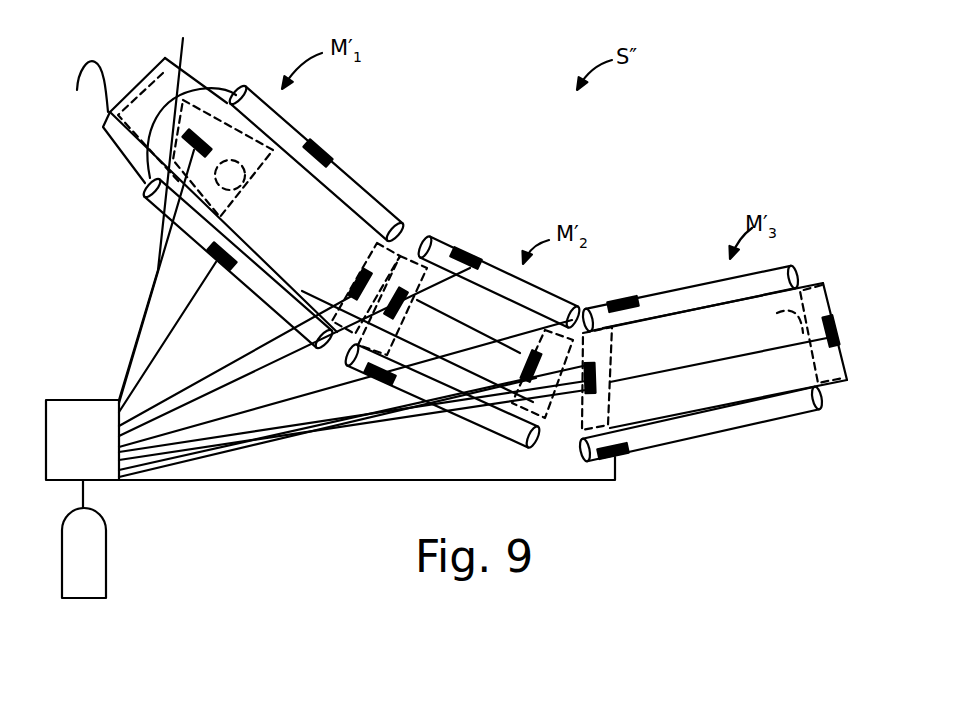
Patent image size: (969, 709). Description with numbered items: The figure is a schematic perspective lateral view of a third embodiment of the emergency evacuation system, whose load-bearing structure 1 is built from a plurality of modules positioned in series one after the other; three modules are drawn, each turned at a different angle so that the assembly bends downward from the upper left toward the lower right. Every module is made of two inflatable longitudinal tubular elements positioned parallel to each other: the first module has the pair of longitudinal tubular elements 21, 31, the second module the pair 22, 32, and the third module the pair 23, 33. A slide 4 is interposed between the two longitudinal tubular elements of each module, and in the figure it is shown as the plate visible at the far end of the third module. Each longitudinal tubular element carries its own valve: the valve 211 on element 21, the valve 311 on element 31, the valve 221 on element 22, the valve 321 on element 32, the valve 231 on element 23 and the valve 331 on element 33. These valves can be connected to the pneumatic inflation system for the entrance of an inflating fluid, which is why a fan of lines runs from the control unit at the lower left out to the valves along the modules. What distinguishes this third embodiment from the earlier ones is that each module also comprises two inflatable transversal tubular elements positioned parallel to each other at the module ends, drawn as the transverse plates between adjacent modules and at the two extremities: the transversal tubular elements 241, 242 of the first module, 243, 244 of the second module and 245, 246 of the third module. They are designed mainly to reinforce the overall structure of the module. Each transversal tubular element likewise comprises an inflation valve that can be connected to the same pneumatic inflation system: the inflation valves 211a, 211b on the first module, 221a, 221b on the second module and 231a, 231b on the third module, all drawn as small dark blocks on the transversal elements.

The load-bearing structure 1 is at (449, 160).
The slide 4 is at (833, 313).
The inflatable longitudinal tubular element 21 is at (364, 186).
The inflatable longitudinal tubular element 22 is at (543, 287).
The inflatable longitudinal tubular element 23 is at (790, 268).
The inflatable longitudinal tubular element 31 is at (157, 215).
The inflatable longitudinal tubular element 32 is at (432, 408).
The inflatable longitudinal tubular element 33 is at (798, 412).
The valve 211 is at (313, 147).
The inflation valve 211a is at (180, 86).
The inflation valve 211b is at (354, 284).
The valve 221 is at (462, 248).
The inflation valve 221a is at (405, 315).
The inflation valve 221b is at (532, 358).
The valve 231 is at (630, 300).
The inflation valve 231a is at (596, 386).
The inflation valve 231b is at (837, 333).
The inflatable transversal tubular element 241 is at (219, 93).
The inflatable transversal tubular element 242 is at (405, 238).
The inflatable transversal tubular element 243 is at (440, 282).
The inflatable transversal tubular element 244 is at (546, 404).
The inflatable transversal tubular element 245 is at (613, 347).
The inflatable transversal tubular element 246 is at (793, 334).
The valve 311 is at (213, 252).
The valve 321 is at (386, 388).
The valve 331 is at (620, 458).